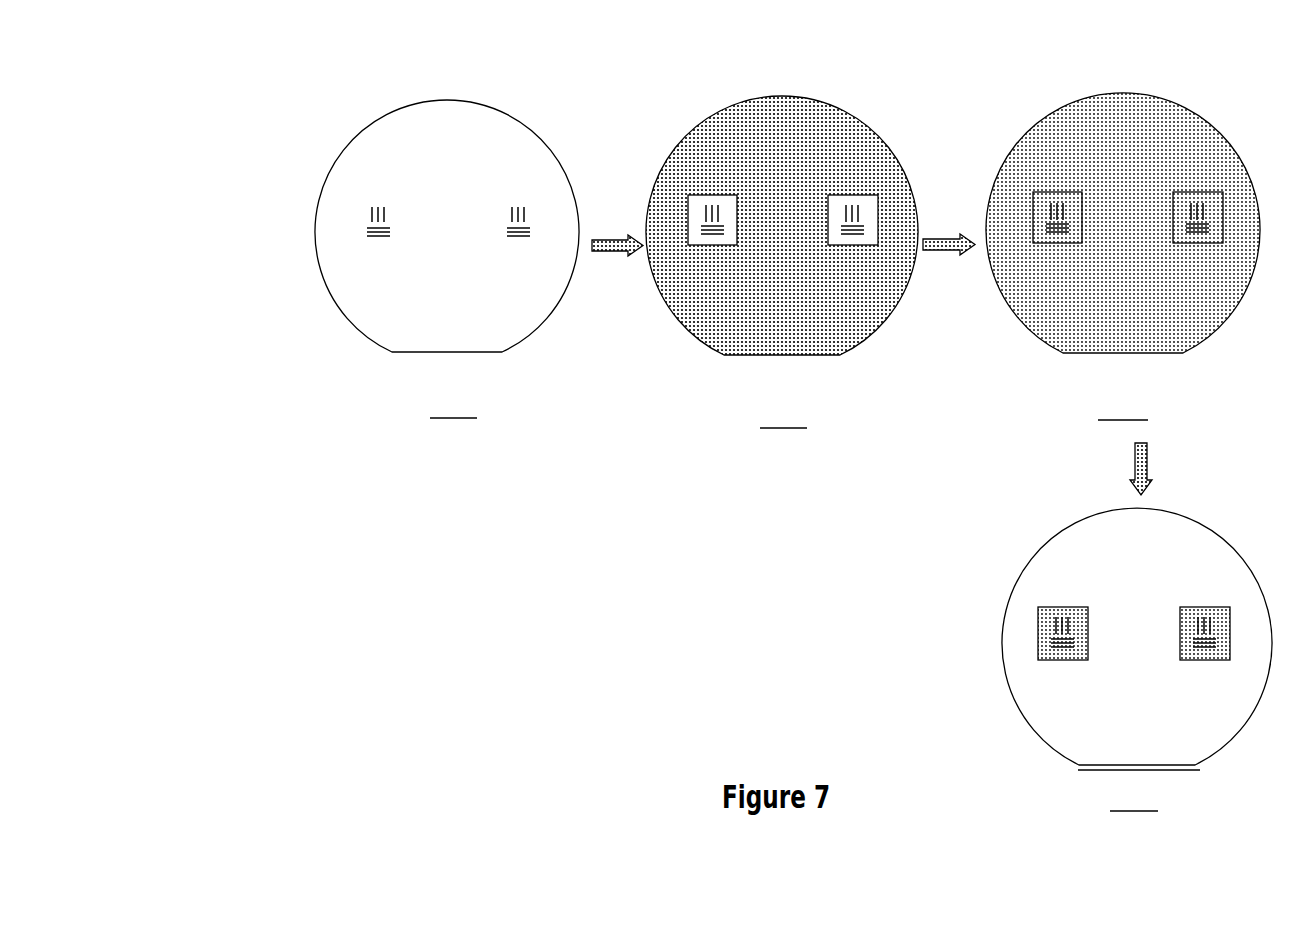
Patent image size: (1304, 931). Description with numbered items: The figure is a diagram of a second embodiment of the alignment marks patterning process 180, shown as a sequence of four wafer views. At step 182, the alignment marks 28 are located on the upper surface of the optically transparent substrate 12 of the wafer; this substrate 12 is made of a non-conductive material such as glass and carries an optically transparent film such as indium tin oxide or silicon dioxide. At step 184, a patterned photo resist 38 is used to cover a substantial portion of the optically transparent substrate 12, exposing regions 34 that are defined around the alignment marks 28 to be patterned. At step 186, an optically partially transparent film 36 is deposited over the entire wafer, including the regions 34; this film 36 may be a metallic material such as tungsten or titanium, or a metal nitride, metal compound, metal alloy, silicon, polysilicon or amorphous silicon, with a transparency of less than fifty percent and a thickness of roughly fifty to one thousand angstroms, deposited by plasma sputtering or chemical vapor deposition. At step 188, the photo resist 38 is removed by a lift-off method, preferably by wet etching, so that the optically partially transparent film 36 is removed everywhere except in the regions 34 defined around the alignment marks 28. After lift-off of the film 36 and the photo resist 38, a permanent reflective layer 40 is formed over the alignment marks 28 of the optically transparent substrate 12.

The alignment marks patterning process 180 is at (280, 59).
The optically transparent substrate 12 is at (325, 297).
The alignment marks 28 is at (495, 215).
The regions 34 is at (745, 189).
The optically partially transparent film 36 is at (1053, 136).
The patterned photo resist 38 is at (690, 291).
The permanent reflective layer 40 is at (1200, 665).
The step 182 is at (396, 261).
The step 184 is at (775, 245).
The step 186 is at (1121, 241).
The step 188 is at (1118, 662).